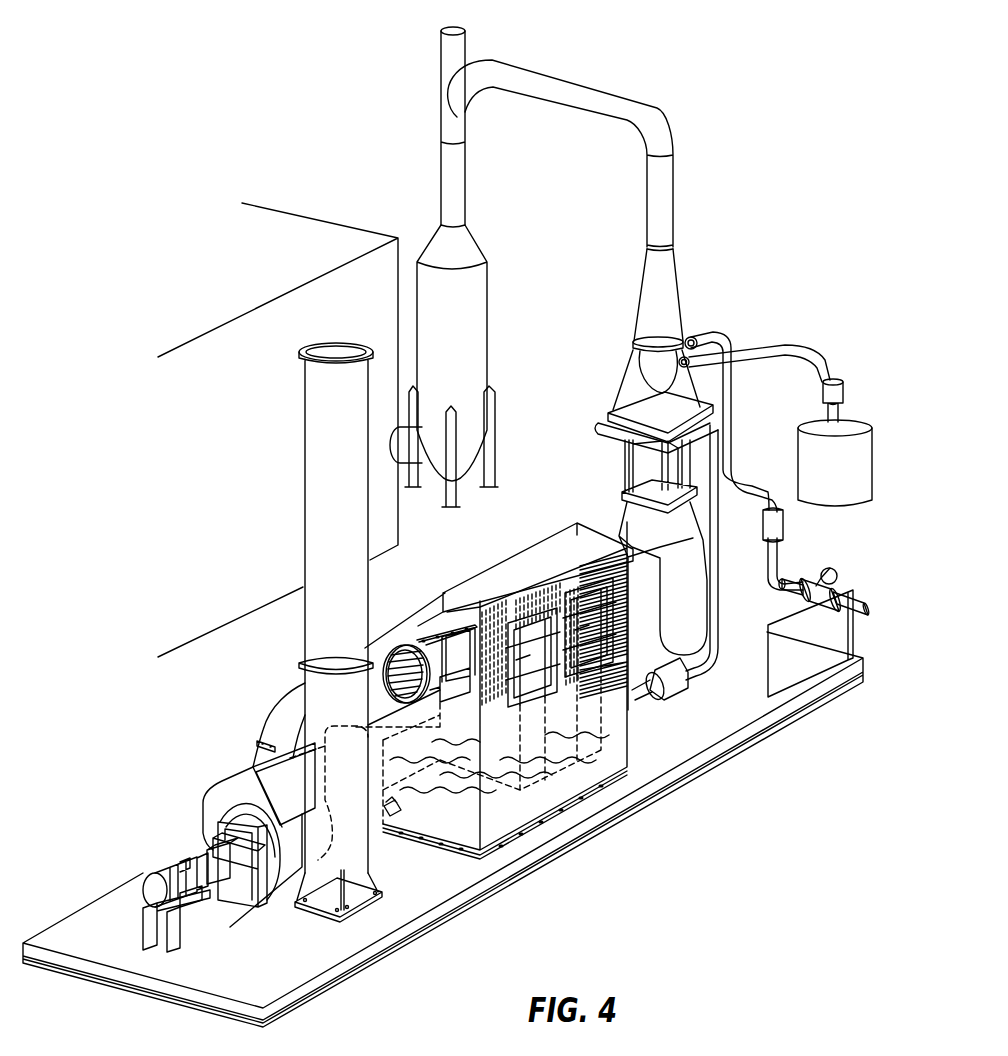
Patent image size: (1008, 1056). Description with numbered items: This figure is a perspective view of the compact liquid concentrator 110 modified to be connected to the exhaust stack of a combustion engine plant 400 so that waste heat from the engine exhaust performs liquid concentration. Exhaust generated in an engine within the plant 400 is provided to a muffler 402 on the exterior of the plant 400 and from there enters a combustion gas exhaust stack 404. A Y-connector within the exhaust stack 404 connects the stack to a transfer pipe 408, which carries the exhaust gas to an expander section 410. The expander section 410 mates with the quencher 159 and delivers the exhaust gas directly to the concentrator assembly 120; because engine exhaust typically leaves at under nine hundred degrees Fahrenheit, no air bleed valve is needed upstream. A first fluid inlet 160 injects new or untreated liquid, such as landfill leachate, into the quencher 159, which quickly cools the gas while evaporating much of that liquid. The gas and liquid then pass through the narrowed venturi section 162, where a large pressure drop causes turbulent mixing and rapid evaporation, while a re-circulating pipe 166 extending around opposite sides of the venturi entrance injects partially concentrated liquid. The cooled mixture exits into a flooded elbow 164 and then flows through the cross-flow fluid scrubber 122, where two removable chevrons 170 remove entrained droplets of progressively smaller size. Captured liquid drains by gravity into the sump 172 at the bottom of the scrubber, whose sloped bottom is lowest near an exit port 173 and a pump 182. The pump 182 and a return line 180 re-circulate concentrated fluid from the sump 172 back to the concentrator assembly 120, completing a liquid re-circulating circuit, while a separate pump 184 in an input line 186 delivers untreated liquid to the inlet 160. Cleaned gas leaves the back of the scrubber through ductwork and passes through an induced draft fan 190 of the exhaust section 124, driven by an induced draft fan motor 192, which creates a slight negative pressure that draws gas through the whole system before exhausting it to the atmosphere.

The compact liquid concentrator 110 is at (630, 847).
The concentrator assembly 120 is at (737, 398).
The fluid scrubber 122 is at (634, 696).
The exhaust section 124 is at (300, 669).
The quencher 159 is at (657, 407).
The first fluid inlet 160 is at (699, 343).
The venturi section 162 is at (620, 457).
The flooded elbow 164 is at (698, 598).
The re-circulating pipe 166 is at (732, 437).
The chevrons 170 is at (532, 620).
The sump 172 is at (620, 730).
The exit port 173 is at (394, 818).
The return line 180 is at (718, 653).
The pump 182 is at (690, 694).
The pump 184 is at (830, 572).
The input line 186 is at (776, 556).
The induced draft fan 190 is at (208, 802).
The induced draft fan motor 192 is at (158, 868).
The combustion engine plant 400 is at (330, 216).
The muffler 402 is at (468, 250).
The combustion gas exhaust stack 404 is at (441, 58).
The transfer pipe 408 is at (656, 108).
The expander section 410 is at (676, 268).